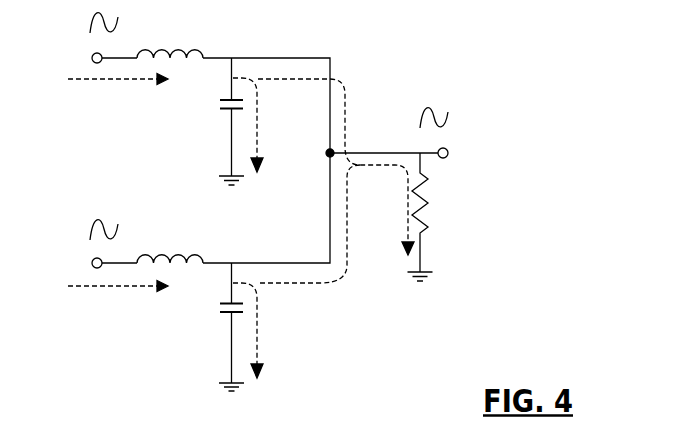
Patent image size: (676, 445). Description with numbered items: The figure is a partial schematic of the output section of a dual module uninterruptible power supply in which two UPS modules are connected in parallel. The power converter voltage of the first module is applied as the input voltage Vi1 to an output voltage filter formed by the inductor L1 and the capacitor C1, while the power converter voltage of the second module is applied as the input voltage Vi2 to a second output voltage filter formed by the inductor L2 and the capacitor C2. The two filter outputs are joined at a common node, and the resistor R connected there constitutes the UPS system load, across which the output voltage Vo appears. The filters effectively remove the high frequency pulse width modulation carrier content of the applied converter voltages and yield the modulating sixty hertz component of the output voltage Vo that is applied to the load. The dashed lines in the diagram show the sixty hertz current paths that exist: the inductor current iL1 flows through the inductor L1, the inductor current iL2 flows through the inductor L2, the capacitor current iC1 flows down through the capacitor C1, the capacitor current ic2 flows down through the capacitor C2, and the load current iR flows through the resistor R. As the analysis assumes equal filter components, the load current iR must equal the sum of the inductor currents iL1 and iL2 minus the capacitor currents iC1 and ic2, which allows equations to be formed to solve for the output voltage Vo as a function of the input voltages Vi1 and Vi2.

The input voltage of module 1 Vi1 is at (82, 41).
The input voltage of module 2 Vi2 is at (83, 247).
The output voltage Vo is at (455, 136).
The inductor L1 is at (160, 38).
The inductor L2 is at (160, 243).
The capacitor C1 is at (249, 121).
The capacitor C2 is at (250, 327).
The resistor R is at (430, 217).
The inductor current iL1 is at (118, 90).
The inductor current iL2 is at (118, 297).
The capacitor current iC1 is at (264, 125).
The capacitor current ic2 is at (263, 330).
The load current iR is at (336, 181).